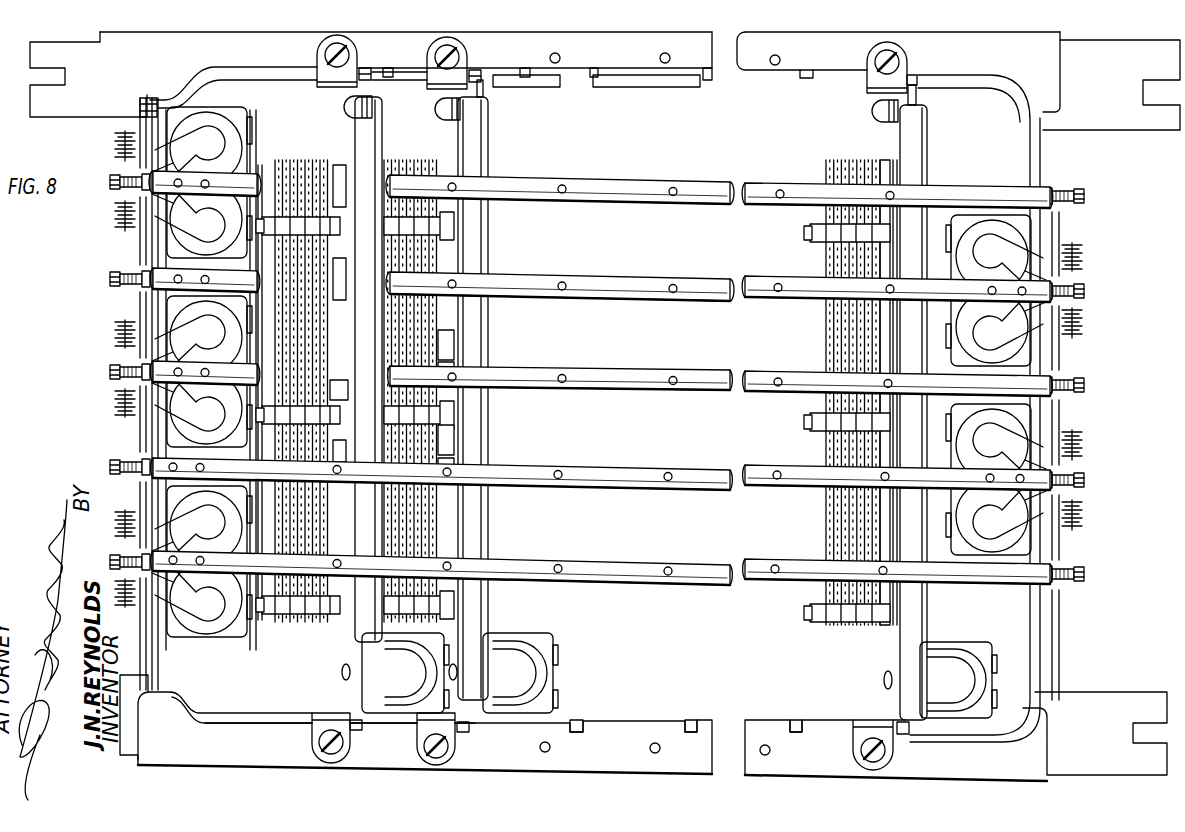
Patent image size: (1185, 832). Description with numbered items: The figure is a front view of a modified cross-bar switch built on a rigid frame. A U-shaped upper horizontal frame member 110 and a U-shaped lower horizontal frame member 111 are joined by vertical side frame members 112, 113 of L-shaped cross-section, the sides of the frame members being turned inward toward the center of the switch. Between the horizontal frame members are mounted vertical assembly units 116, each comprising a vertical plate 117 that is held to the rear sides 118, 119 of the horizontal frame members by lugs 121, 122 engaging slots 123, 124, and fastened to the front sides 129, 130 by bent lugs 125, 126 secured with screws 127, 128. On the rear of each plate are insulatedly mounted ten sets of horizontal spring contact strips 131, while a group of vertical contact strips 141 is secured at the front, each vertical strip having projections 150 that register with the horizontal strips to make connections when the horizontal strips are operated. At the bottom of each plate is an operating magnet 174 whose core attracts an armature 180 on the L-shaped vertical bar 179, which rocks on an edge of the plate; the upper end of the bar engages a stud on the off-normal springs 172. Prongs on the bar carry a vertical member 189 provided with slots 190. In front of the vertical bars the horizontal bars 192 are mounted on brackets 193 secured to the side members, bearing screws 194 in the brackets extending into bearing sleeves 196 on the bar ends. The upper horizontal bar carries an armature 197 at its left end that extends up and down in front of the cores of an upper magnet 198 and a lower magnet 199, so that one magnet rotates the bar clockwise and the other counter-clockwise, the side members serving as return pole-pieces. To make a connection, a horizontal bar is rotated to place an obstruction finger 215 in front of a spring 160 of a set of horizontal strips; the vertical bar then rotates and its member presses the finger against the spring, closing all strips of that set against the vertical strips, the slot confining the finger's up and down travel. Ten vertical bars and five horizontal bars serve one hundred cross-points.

The upper horizontal frame member 110 is at (1076, 43).
The lower horizontal frame member 111 is at (1082, 694).
The vertical side frame member 112 is at (154, 657).
The vertical side frame member 113 is at (1036, 624).
The vertical assembly unit 116 is at (300, 332).
The vertical plate 117 is at (916, 92).
The rear side of upper horizontal frame member 118 is at (559, 72).
The rear side of lower horizontal frame member 119 is at (684, 722).
The lug 121 is at (372, 80).
The lug 122 is at (364, 729).
The slot 123 is at (388, 75).
The slot 124 is at (588, 720).
The bent lug 125 is at (337, 43).
The bent lug 126 is at (317, 750).
The screw 127 is at (346, 54).
The screw 128 is at (341, 749).
The front side of upper horizontal frame member 129 is at (522, 86).
The front side of lower horizontal frame member 130 is at (641, 735).
The horizontal spring contact strips 131 is at (876, 168).
The vertical contact strips 141 is at (860, 341).
The projections 150 is at (292, 352).
The spring 160 is at (338, 355).
The off-normal springs 172 is at (440, 112).
The operating magnet 174 is at (434, 640).
The vertical bar 179 is at (381, 145).
The armature 180 is at (418, 658).
The vertical member 189 is at (340, 381).
The slot 190 is at (340, 405).
The horizontal bar 192 is at (615, 195).
The bracket 193 is at (139, 292).
The bearing screw 194 is at (118, 185).
The bearing sleeve 196 is at (160, 171).
The armature 197 is at (190, 226).
The upper magnet 198 is at (205, 127).
The lower magnet 199 is at (228, 243).
The obstruction finger 215 is at (778, 272).